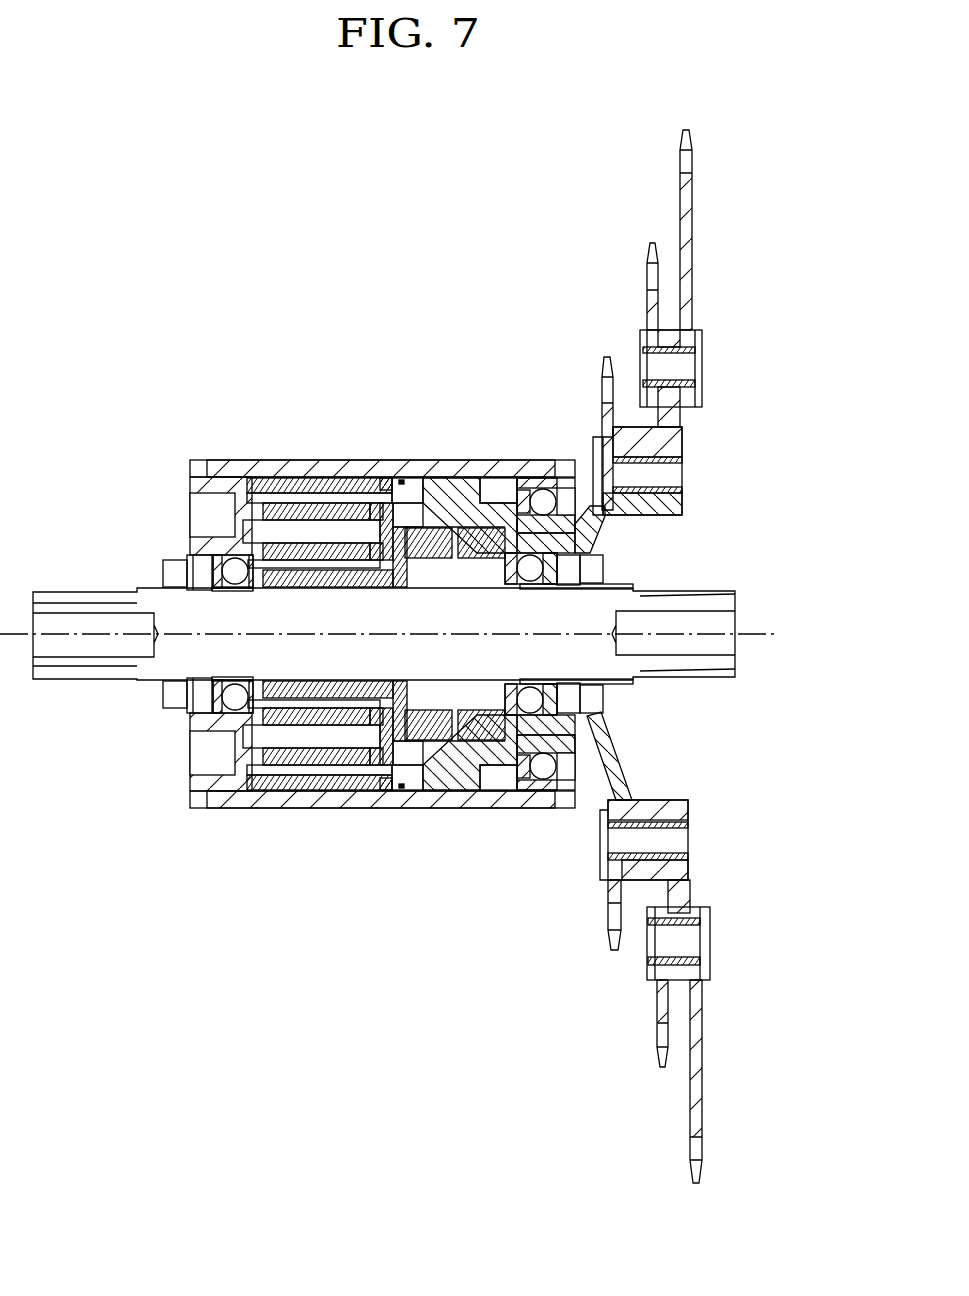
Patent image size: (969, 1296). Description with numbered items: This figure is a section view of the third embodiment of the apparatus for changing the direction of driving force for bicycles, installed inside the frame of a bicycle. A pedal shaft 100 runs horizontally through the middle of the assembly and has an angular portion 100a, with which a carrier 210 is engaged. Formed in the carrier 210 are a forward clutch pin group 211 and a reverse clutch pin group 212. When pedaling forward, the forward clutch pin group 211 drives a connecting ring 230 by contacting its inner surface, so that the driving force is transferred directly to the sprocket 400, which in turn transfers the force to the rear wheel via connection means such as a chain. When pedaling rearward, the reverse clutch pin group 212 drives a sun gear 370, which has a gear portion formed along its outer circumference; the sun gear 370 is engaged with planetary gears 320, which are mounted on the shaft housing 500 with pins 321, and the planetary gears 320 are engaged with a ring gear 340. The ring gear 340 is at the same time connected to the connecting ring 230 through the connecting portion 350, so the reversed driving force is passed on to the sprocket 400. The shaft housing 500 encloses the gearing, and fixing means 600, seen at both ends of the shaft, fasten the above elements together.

The pedal shaft 100 is at (152, 587).
The angular portion 100a is at (480, 553).
The carrier 210 is at (478, 740).
The forward clutch pin group 211 is at (493, 757).
The reverse clutch pin group 212 is at (443, 763).
The connecting ring 230 is at (497, 503).
The planetary gears 320 is at (337, 757).
The pins 321 is at (252, 533).
The ring gear 340 is at (315, 485).
The connecting portion 350 is at (398, 480).
The sun gear 370 is at (433, 503).
The sprocket 400 is at (714, 448).
The shaft housing 500 is at (243, 470).
The fixing means 600 is at (163, 710).